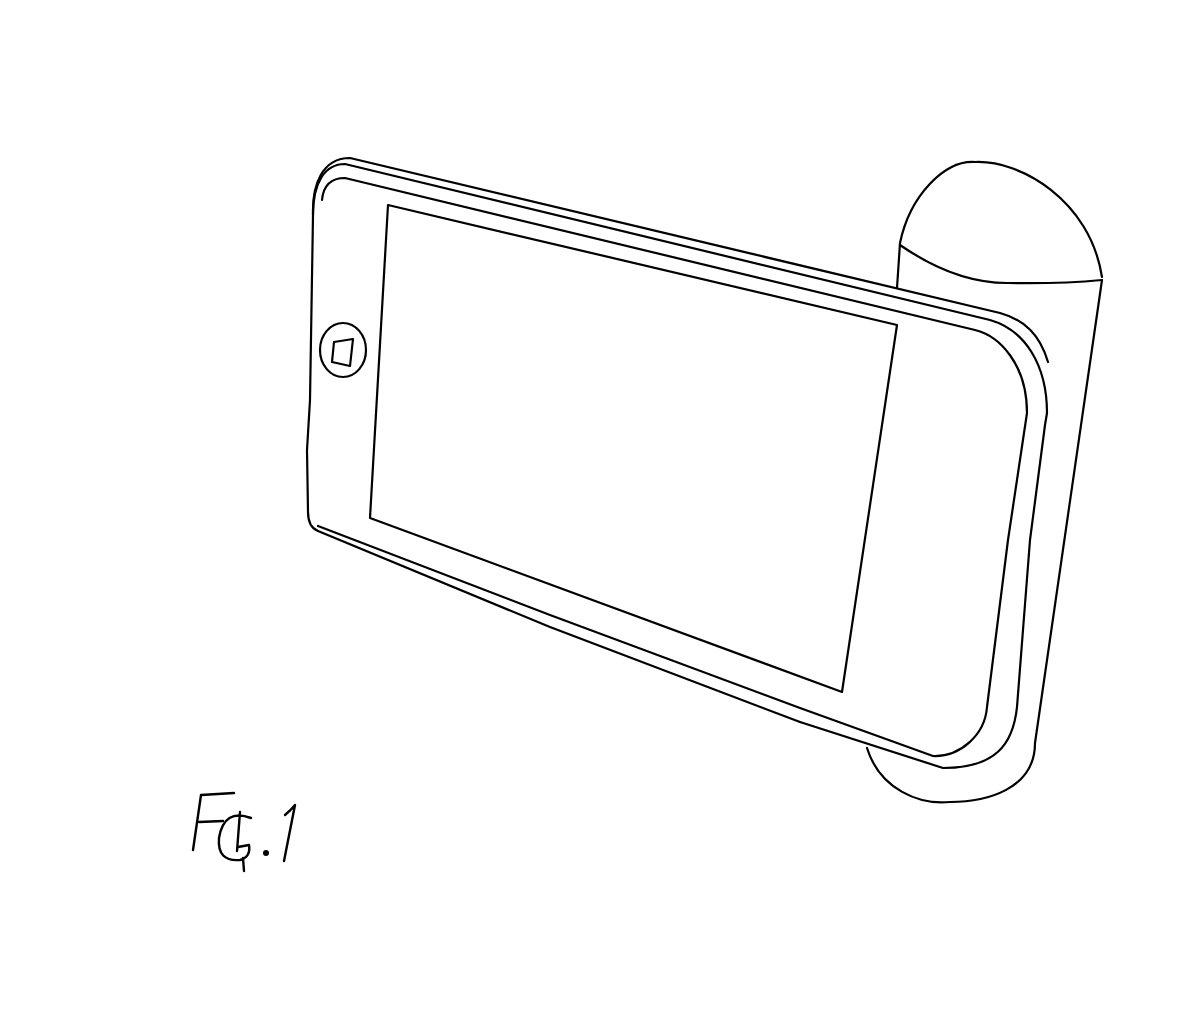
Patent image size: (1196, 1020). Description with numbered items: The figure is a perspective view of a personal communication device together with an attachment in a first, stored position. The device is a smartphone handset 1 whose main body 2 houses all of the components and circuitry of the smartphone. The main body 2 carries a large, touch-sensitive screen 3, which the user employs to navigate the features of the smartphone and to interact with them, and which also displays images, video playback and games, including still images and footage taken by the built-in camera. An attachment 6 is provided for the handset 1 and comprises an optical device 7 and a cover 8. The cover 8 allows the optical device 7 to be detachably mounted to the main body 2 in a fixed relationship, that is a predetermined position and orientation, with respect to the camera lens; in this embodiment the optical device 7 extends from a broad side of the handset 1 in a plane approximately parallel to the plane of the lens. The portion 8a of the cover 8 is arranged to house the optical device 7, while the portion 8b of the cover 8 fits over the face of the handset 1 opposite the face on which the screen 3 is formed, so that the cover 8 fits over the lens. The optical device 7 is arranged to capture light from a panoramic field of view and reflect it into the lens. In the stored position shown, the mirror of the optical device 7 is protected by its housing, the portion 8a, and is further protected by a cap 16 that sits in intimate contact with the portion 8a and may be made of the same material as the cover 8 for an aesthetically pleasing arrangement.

The handset 1 is at (300, 323).
The main body 2 is at (312, 232).
The touch-sensitive screen 3 is at (458, 534).
The attachment 6 is at (1060, 580).
The optical device 7 is at (1070, 313).
The cover 8 is at (845, 258).
The portion of the cover 8a is at (1035, 745).
The portion of the cover 8b is at (825, 735).
The cap 16 is at (987, 162).